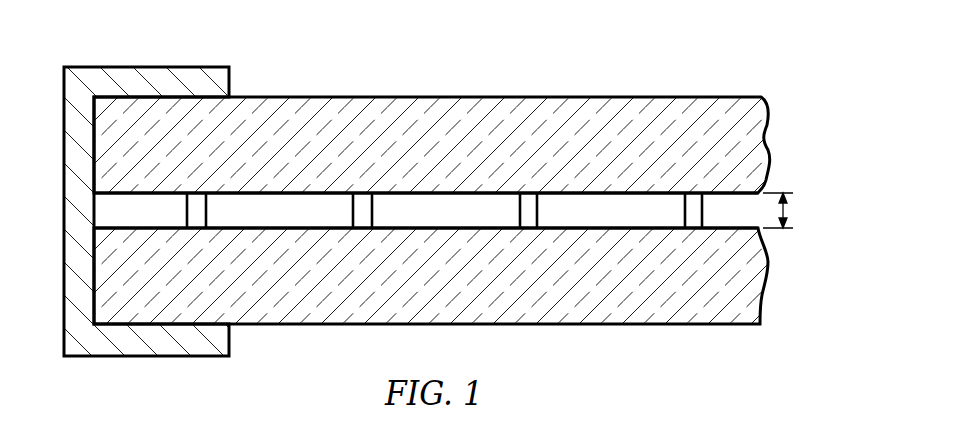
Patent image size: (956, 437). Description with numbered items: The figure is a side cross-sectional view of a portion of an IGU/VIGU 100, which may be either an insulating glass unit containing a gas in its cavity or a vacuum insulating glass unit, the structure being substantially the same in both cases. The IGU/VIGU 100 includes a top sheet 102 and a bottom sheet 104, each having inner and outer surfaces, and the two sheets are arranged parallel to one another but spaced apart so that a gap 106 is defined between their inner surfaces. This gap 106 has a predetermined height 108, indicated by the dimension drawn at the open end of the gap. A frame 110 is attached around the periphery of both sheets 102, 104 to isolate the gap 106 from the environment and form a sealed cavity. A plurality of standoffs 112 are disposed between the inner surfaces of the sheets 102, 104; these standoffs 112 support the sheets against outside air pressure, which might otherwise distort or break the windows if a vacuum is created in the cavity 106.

The IGU/VIGU 100 is at (454, 197).
The top sheet 102 is at (295, 97).
The bottom sheet 104 is at (540, 327).
The gap 106 is at (442, 217).
The predetermined height 108 is at (791, 212).
The frame 110 is at (160, 67).
The standoffs 112 is at (207, 217).